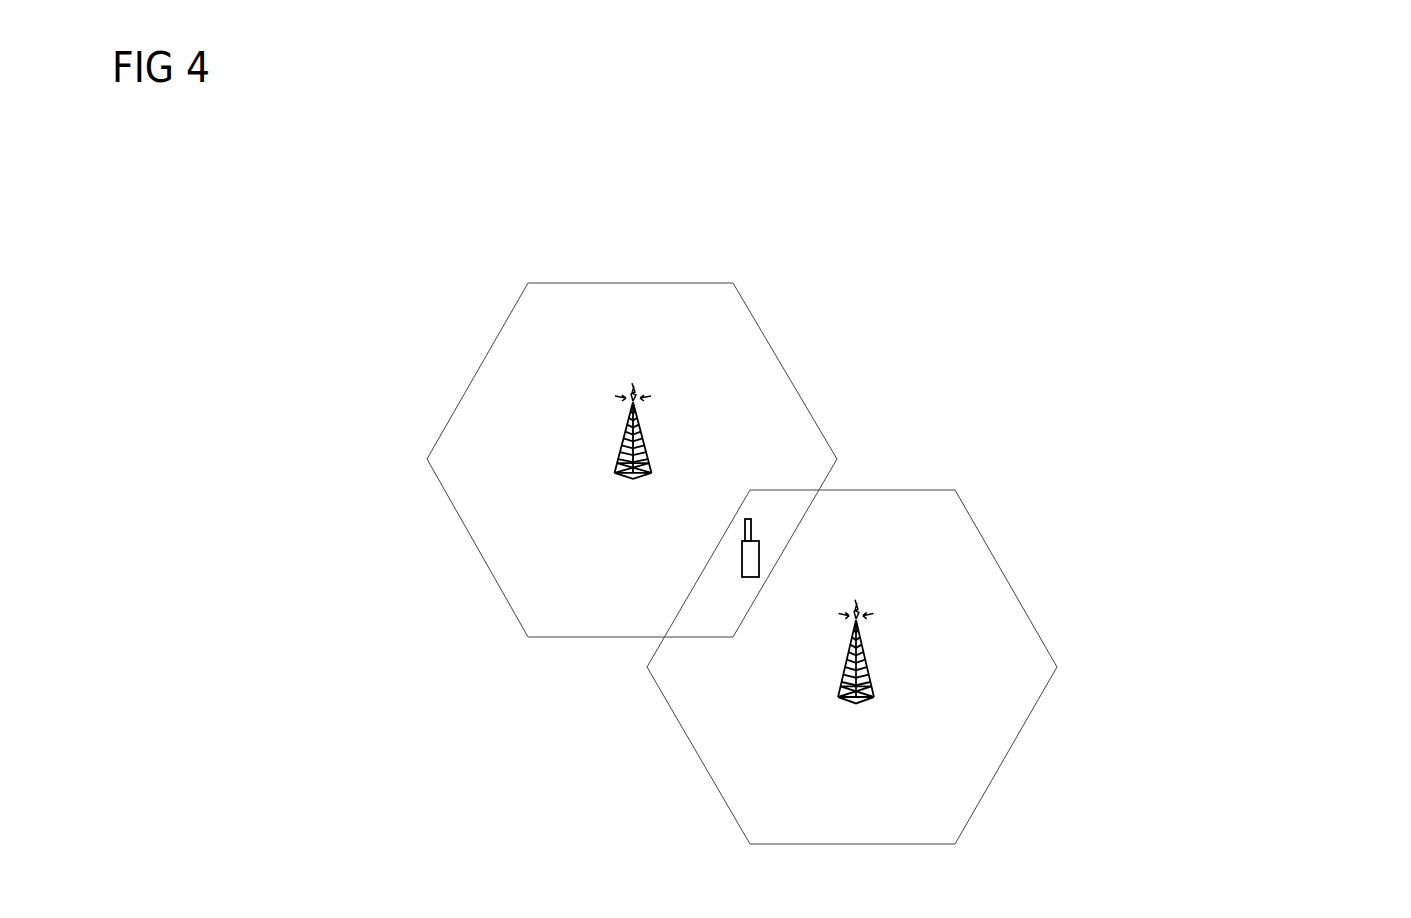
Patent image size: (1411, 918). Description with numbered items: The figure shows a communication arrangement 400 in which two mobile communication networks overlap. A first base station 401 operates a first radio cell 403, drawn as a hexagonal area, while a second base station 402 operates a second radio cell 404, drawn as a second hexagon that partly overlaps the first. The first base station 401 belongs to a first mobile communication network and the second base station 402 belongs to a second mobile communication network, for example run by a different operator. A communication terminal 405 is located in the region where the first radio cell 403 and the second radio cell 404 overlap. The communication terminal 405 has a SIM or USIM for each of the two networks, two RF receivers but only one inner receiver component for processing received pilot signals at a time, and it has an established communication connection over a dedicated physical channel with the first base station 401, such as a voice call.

The communication arrangement 400 is at (1286, 137).
The first base station 401 is at (645, 437).
The second base station 402 is at (868, 655).
The first radio cell 403 is at (753, 320).
The second radio cell 404 is at (940, 489).
The communication terminal 405 is at (760, 553).